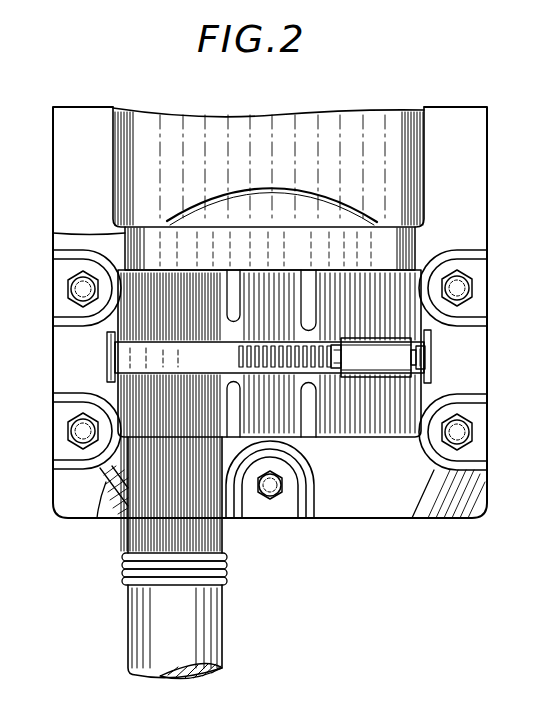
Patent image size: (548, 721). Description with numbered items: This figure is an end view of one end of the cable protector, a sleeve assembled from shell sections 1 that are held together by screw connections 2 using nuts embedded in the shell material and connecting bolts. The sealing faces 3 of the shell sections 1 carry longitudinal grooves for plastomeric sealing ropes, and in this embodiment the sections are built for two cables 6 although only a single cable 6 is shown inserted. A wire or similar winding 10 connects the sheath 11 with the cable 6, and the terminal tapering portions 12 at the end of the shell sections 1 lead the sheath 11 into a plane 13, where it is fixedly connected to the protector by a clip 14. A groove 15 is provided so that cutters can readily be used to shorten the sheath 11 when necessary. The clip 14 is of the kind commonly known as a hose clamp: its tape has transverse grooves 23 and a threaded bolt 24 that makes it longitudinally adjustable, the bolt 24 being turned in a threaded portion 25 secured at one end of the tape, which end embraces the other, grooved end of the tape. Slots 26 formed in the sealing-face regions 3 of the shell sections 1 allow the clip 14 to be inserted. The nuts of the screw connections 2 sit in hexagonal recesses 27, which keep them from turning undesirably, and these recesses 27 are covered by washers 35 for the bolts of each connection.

The shell section 1 is at (343, 122).
The screw connection 2 is at (72, 430).
The sealing face 3 is at (62, 128).
The cable 6 is at (194, 681).
The wire winding 10 is at (228, 576).
The sheath 11 is at (128, 604).
The terminal tapering portion 12 is at (99, 518).
The plane 13 is at (196, 266).
The clip 14 is at (115, 357).
The groove 15 is at (58, 236).
The transverse grooves 23 is at (279, 345).
The threaded bolt 24 is at (334, 341).
The threaded portion 25 is at (382, 370).
The slots 26 is at (105, 341).
The hexagonal recess 27 is at (66, 284).
The washer 35 is at (280, 500).